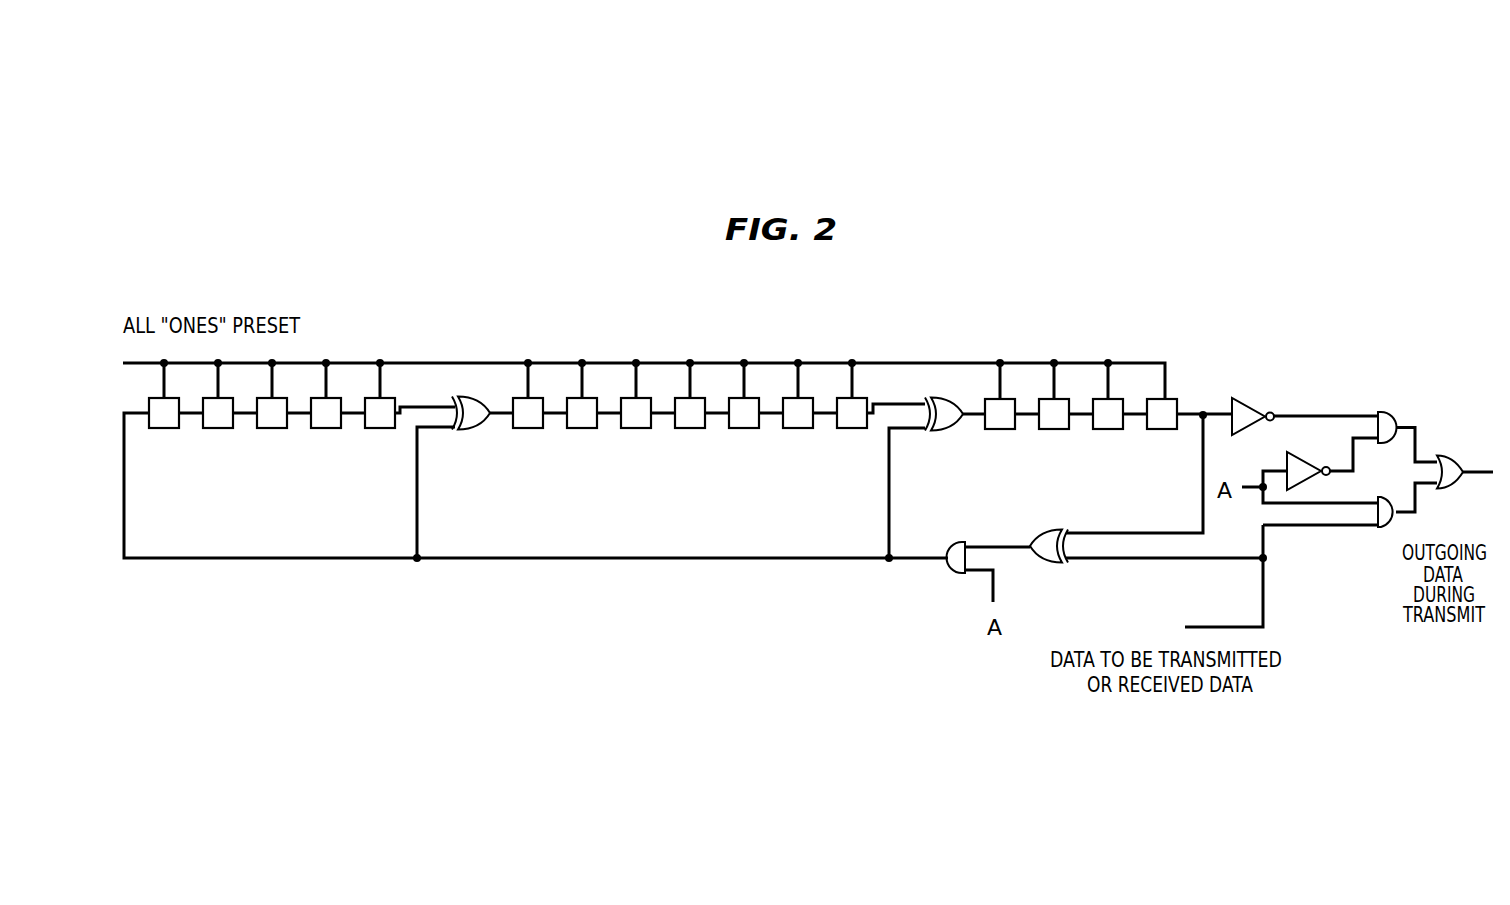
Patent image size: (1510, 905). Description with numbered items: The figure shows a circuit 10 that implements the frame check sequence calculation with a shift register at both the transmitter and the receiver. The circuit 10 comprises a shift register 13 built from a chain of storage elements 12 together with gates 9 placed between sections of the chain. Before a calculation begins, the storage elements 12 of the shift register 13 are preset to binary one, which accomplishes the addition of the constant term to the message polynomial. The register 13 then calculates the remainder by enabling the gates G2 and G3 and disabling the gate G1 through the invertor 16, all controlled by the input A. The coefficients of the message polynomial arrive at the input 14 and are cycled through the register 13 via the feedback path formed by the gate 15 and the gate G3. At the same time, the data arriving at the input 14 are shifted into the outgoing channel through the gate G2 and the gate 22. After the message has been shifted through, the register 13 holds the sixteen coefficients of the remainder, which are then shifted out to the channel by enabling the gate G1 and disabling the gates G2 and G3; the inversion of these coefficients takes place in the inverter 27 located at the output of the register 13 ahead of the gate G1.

The circuit 10 is at (263, 592).
The storage elements 12 is at (166, 429).
The shift register 13 is at (548, 336).
The gates 9 is at (476, 431).
The inverter 27 is at (1252, 398).
The invertor 16 is at (1308, 462).
The gate G1 is at (1388, 412).
The gate G2 is at (1384, 528).
The gate G3 is at (950, 568).
The gate 22 is at (1458, 456).
The input 14 is at (1212, 627).
The gate 15 is at (1050, 565).